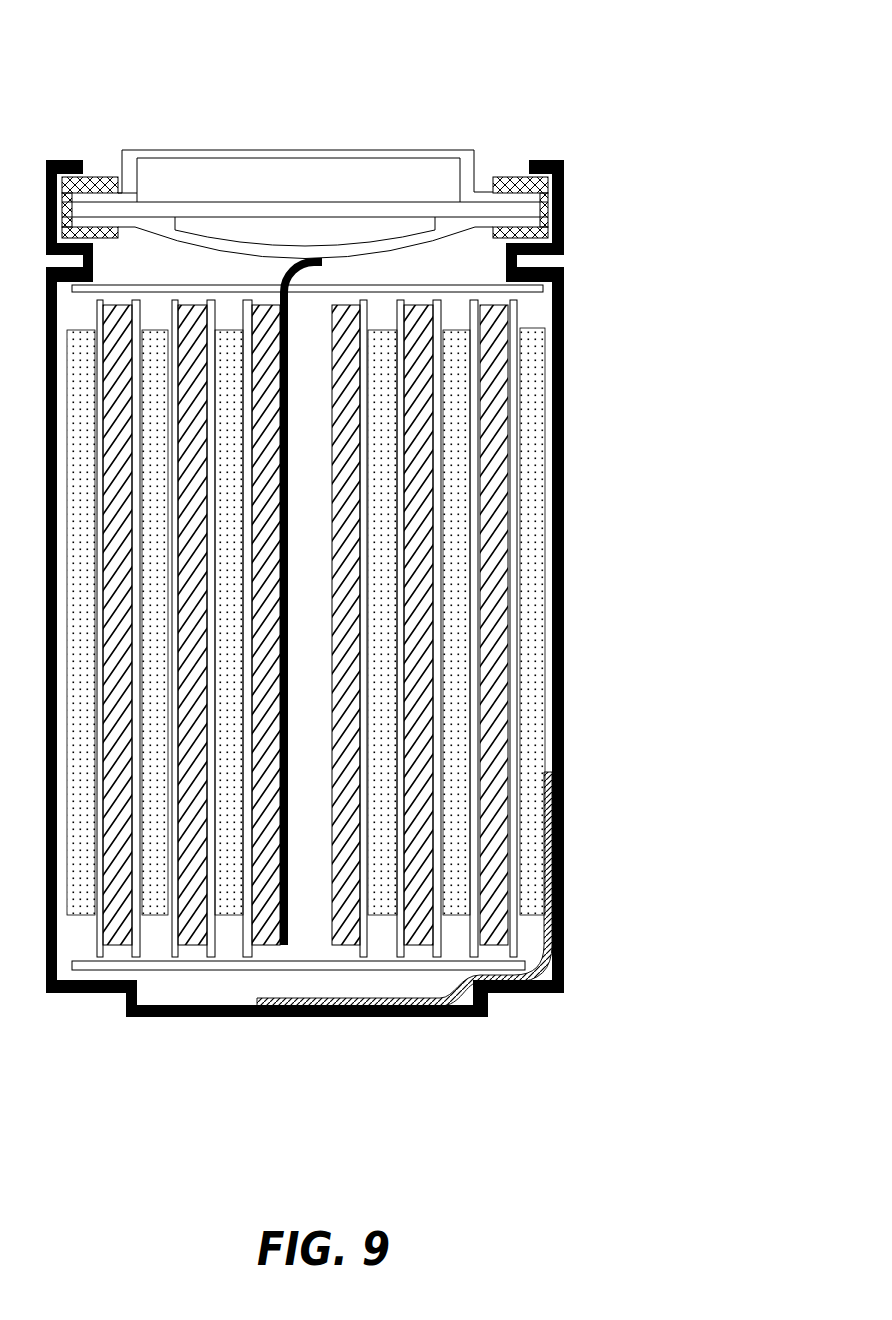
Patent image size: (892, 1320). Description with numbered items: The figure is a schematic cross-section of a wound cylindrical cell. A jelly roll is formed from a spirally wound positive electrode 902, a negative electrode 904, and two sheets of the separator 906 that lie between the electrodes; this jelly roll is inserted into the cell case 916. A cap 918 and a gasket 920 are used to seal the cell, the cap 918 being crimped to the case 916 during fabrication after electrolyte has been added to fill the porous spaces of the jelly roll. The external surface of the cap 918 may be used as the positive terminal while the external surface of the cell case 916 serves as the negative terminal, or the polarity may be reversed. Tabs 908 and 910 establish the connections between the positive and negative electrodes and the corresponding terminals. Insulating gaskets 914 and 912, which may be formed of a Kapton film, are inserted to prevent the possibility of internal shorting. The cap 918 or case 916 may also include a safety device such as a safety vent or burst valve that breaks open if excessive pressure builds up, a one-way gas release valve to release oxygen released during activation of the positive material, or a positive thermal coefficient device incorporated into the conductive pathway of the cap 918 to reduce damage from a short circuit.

The positive electrode 902 is at (528, 652).
The negative electrode 904 is at (497, 498).
The separator 906 is at (502, 330).
The tab 908 is at (288, 275).
The tab 910 is at (540, 962).
The insulating gasket 912 is at (457, 285).
The insulating gasket 914 is at (420, 968).
The cell case 916 is at (192, 1005).
The cap 918 is at (382, 152).
The gasket 920 is at (520, 177).